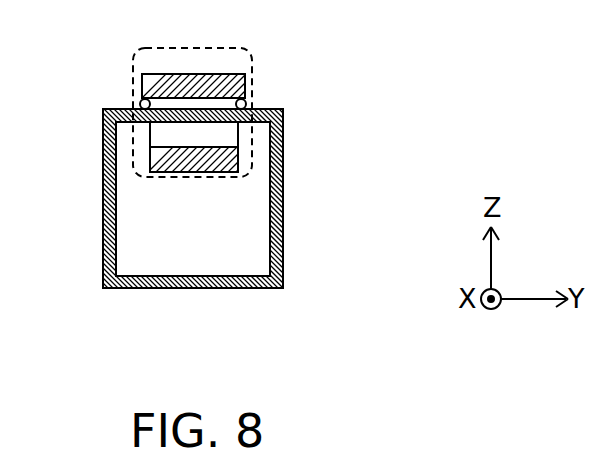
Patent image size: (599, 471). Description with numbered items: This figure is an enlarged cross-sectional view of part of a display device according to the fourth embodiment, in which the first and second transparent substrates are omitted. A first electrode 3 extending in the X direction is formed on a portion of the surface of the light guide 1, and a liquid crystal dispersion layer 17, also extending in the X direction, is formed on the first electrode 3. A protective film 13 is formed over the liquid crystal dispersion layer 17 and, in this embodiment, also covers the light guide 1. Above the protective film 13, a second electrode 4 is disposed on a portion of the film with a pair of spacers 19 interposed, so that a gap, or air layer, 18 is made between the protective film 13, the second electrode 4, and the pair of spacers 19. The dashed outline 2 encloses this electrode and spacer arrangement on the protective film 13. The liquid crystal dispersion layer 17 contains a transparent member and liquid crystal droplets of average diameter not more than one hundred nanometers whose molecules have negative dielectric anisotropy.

The light guide 1 is at (153, 200).
The protective film 13 is at (283, 245).
The drive unit 2 is at (145, 50).
The first electrode 3 is at (153, 155).
The second electrode 4 is at (240, 84).
The liquid crystal dispersion layer 17 is at (225, 131).
The gap (air layer) 18 is at (246, 103).
The spacers 19 is at (140, 104).